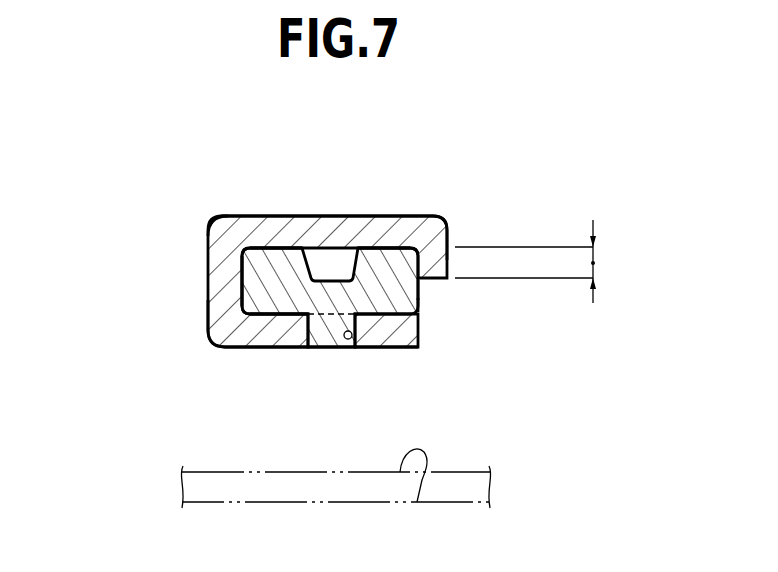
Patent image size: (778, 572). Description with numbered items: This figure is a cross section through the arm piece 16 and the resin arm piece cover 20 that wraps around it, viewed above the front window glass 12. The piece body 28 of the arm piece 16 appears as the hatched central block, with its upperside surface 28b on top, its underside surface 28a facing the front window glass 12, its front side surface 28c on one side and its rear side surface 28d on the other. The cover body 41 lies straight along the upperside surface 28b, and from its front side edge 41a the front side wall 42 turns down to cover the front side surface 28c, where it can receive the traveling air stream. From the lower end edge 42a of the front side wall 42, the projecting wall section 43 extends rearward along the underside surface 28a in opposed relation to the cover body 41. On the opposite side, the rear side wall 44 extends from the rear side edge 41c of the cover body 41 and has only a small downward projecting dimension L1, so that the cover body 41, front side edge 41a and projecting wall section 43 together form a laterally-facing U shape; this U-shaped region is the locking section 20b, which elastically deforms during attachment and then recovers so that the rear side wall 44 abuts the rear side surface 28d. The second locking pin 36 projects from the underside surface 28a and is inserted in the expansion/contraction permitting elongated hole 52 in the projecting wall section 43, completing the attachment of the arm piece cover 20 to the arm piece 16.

The arm piece cover 20 is at (299, 228).
The locking section 20b is at (201, 220).
The cover body 41 is at (353, 216).
The front side edge 41a is at (223, 216).
The rear side edge 41c is at (432, 216).
The front side wall 42 is at (208, 290).
The lower end edge 42a is at (208, 328).
The projecting wall section 43 is at (280, 337).
The rear side wall 44 is at (448, 248).
The downward projecting dimension L1 is at (593, 263).
The piece body 28 is at (417, 316).
The underside surface 28a is at (272, 316).
The upperside surface 28b is at (286, 248).
The front side surface 28c is at (243, 267).
The rear side surface 28d is at (418, 293).
The arm piece 16 is at (432, 306).
The second locking pin 36 is at (332, 333).
The expansion/contraction permitting elongated hole 52 is at (348, 340).
The front window glass 12 is at (417, 502).